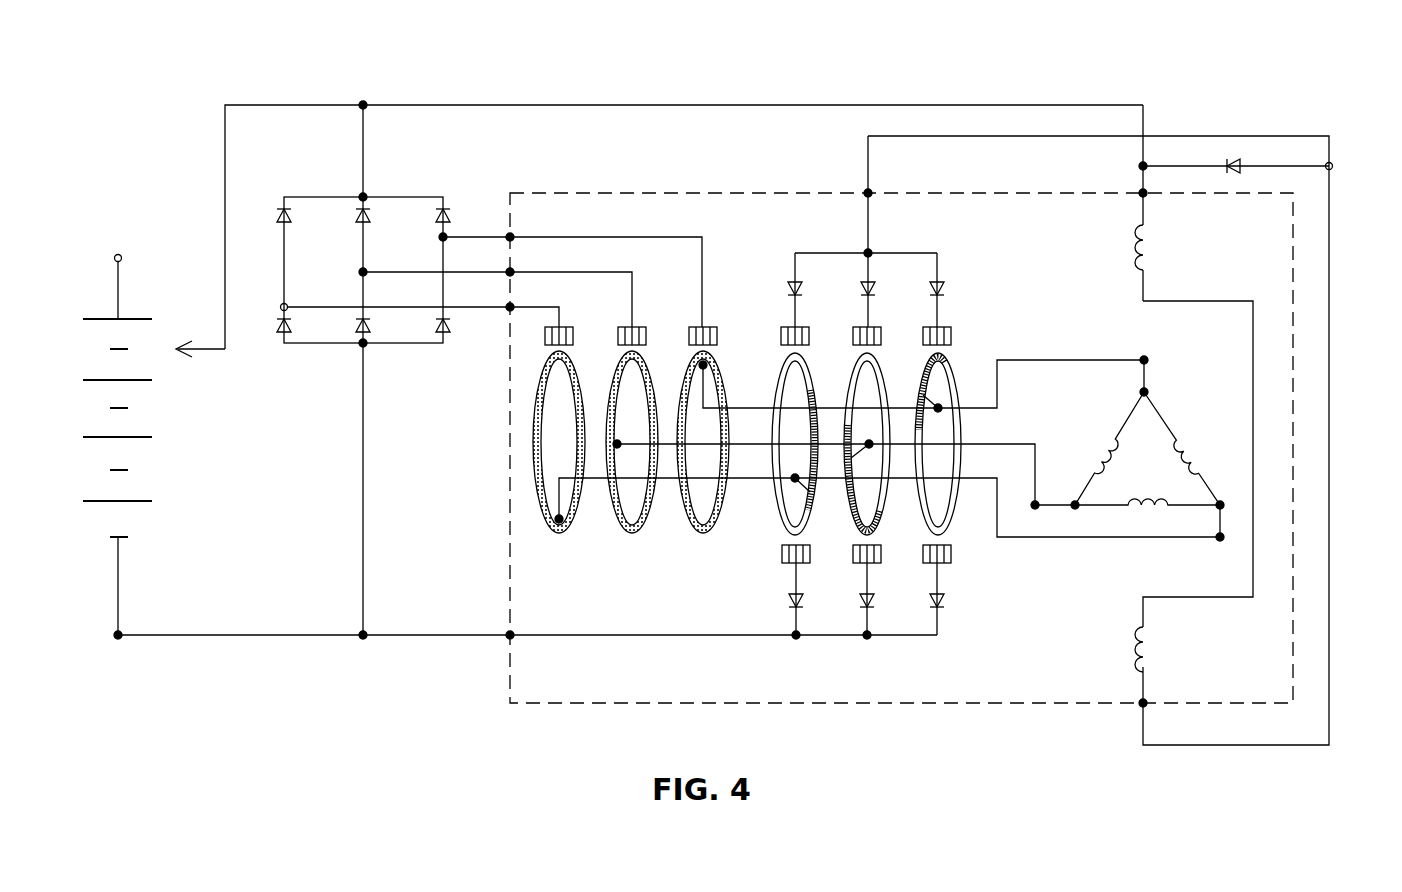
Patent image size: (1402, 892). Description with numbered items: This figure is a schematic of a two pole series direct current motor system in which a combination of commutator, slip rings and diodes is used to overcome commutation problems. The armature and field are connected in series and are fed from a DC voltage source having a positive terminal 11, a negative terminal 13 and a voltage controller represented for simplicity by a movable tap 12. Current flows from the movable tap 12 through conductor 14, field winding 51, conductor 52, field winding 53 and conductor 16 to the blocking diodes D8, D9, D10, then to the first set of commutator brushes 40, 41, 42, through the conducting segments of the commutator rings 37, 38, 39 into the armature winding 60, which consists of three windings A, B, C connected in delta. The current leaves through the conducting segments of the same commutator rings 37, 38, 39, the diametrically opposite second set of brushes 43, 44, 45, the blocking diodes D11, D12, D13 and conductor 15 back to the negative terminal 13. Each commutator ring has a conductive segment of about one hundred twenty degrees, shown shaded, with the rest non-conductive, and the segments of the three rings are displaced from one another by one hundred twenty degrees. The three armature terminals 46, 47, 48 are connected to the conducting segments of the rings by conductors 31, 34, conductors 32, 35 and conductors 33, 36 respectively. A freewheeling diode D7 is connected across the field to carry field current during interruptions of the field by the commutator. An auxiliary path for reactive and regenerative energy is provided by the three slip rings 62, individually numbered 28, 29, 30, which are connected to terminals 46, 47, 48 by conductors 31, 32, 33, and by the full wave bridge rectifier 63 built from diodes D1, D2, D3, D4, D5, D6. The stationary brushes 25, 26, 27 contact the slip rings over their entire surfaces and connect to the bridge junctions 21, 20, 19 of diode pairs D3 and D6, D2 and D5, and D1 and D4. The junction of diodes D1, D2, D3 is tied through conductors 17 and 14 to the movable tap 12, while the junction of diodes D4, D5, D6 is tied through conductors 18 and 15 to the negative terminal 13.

The positive terminal of the DC voltage source 11 is at (135, 283).
The movable tap 12 is at (180, 363).
The negative terminal of the DC voltage source 13 is at (128, 624).
The conductor 14 is at (300, 106).
The conductor 15 is at (271, 638).
The conductor 16 is at (1340, 405).
The conductor 17 is at (370, 165).
The conductor 18 is at (370, 483).
The junction point of diodes D1 and D4 19 is at (288, 302).
The junction point of diodes D2 and D5 20 is at (355, 271).
The junction point of diodes D3 and D6 21 is at (440, 239).
The slip ring brush 25 is at (714, 328).
The slip ring brush 26 is at (643, 328).
The slip ring brush 27 is at (570, 328).
The slip ring 28 is at (725, 378).
The slip ring 29 is at (653, 378).
The slip ring 30 is at (580, 378).
The conductor 31 is at (1008, 420).
The conductor 32 is at (1008, 455).
The conductor 33 is at (1008, 490).
The conductor 34 is at (928, 414).
The conductor 35 is at (854, 450).
The conductor 36 is at (804, 480).
The commutator ring 37 is at (962, 378).
The commutator ring 38 is at (890, 378).
The commutator ring 39 is at (818, 378).
The commutator brush 40 is at (948, 328).
The commutator brush 41 is at (878, 328).
The commutator brush 42 is at (806, 328).
The commutator brush 43 is at (945, 568).
The commutator brush 44 is at (875, 568).
The commutator brush 45 is at (804, 568).
The armature winding terminal 46 is at (1152, 360).
The armature winding terminal 47 is at (1038, 512).
The armature winding terminal 48 is at (1222, 547).
The field winding 51 is at (1160, 250).
The conductor 52 is at (1268, 384).
The field winding 53 is at (1160, 645).
The armature winding 60 is at (1141, 419).
The slip rings 62 is at (718, 287).
The full wave bridge rectifier 63 is at (406, 241).
The diode D1 is at (300, 220).
The diode D2 is at (379, 220).
The diode D3 is at (460, 220).
The diode D4 is at (300, 330).
The diode D5 is at (379, 330).
The diode D6 is at (460, 330).
The freewheeling diode D7 is at (1236, 152).
The blocking diode D8 is at (949, 285).
The blocking diode D9 is at (880, 285).
The blocking diode D10 is at (813, 279).
The blocking diode D11 is at (945, 600).
The blocking diode D12 is at (875, 600).
The blocking diode D13 is at (804, 600).